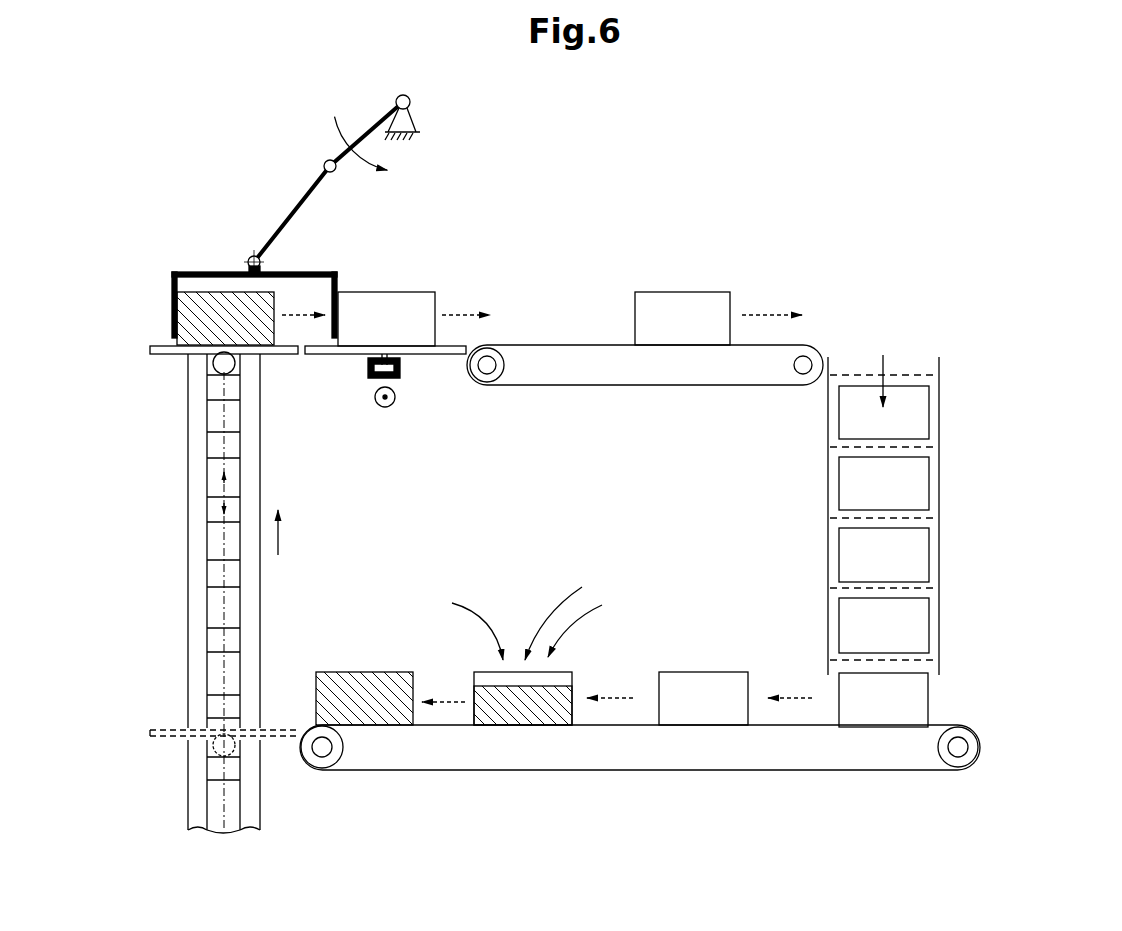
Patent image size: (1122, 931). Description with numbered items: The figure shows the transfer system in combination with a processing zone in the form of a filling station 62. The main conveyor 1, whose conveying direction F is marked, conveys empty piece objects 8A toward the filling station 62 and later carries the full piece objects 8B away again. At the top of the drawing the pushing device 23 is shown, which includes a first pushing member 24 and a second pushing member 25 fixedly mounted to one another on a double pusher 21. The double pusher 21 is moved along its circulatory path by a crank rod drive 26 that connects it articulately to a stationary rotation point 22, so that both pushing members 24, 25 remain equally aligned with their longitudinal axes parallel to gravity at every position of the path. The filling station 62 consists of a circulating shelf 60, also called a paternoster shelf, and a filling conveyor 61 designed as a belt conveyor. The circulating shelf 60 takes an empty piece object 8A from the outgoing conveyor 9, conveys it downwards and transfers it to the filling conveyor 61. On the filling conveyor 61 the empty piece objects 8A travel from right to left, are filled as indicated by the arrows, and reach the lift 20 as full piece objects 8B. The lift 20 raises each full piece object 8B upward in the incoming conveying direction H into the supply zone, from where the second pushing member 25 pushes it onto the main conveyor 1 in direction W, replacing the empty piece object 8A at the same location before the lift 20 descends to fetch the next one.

The main conveyor 1 is at (352, 393).
The empty piece object 8A is at (420, 302).
The full piece object 8B is at (263, 333).
The outgoing conveyor 9 is at (521, 397).
The lift 20 is at (180, 581).
The double pusher 21 is at (316, 272).
The stationary rotation point 22 is at (410, 100).
The pushing device 23 is at (497, 175).
The first pushing member 24 is at (338, 283).
The second pushing member 25 is at (172, 283).
The crank rod drive 26 is at (280, 143).
The circulating shelf 60 is at (977, 502).
The filling conveyor 61 is at (623, 785).
The filling station 62 is at (1013, 570).
The conveying direction F is at (394, 405).
The conveying direction W is at (781, 313).
The incoming conveying direction H is at (278, 535).